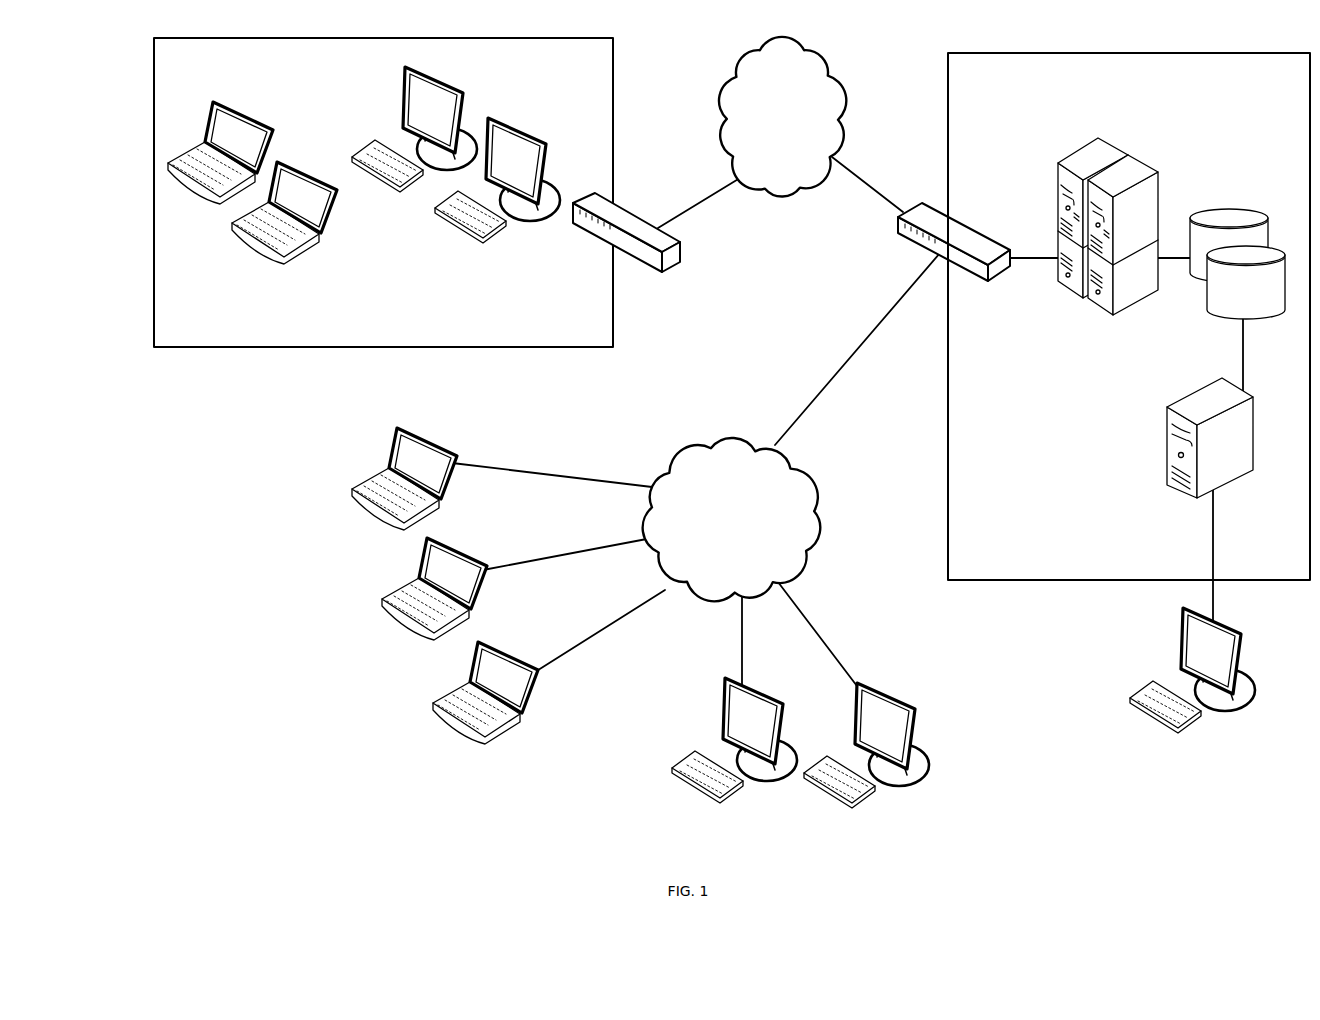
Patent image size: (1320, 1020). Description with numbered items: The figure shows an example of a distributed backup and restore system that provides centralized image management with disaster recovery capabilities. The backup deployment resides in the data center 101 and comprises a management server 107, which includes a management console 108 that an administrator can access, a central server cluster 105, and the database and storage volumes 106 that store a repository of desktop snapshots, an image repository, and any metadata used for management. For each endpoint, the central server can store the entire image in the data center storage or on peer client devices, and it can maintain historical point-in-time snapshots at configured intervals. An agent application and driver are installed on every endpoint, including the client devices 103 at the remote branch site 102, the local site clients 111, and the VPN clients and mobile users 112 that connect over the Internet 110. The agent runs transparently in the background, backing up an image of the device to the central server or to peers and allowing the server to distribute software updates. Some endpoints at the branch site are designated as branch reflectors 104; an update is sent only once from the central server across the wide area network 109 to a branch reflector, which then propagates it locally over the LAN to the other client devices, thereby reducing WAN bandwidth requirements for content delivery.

The data center 101 is at (1129, 316).
The remote branch site 102 is at (383, 192).
The client devices 103 is at (252, 197).
The branch reflectors 104 is at (456, 175).
The central server cluster 105 is at (1105, 252).
The database and storage volumes 106 is at (1237, 232).
The management server 107 is at (1169, 455).
The management console 108 is at (1192, 694).
The wide area network (WAN) 109 is at (782, 117).
The Internet 110 is at (732, 519).
The local site clients 111 is at (800, 755).
The VPN clients and mobile users 112 is at (393, 586).